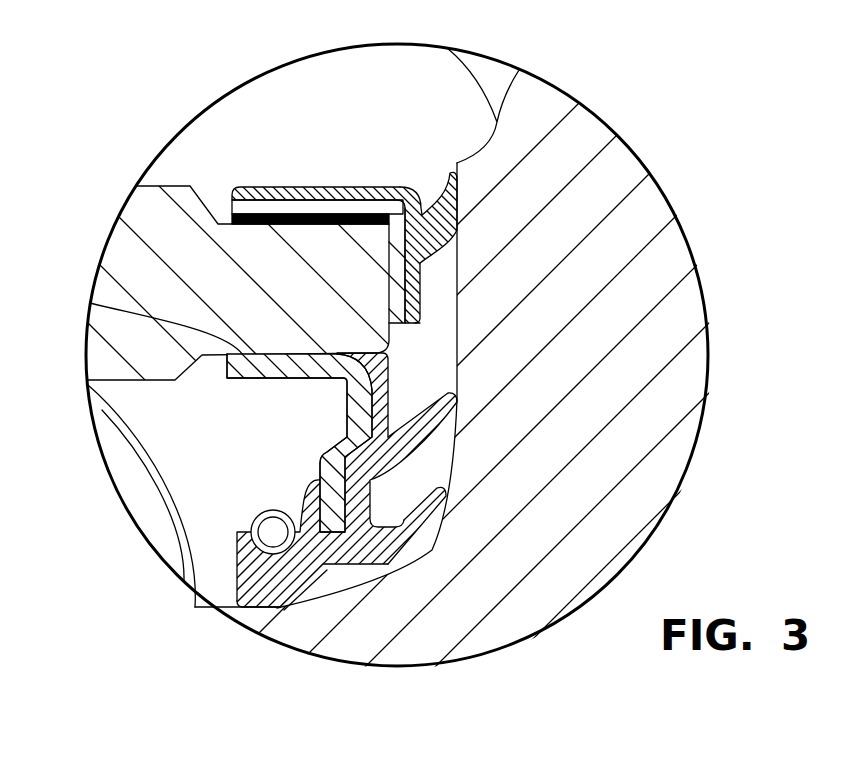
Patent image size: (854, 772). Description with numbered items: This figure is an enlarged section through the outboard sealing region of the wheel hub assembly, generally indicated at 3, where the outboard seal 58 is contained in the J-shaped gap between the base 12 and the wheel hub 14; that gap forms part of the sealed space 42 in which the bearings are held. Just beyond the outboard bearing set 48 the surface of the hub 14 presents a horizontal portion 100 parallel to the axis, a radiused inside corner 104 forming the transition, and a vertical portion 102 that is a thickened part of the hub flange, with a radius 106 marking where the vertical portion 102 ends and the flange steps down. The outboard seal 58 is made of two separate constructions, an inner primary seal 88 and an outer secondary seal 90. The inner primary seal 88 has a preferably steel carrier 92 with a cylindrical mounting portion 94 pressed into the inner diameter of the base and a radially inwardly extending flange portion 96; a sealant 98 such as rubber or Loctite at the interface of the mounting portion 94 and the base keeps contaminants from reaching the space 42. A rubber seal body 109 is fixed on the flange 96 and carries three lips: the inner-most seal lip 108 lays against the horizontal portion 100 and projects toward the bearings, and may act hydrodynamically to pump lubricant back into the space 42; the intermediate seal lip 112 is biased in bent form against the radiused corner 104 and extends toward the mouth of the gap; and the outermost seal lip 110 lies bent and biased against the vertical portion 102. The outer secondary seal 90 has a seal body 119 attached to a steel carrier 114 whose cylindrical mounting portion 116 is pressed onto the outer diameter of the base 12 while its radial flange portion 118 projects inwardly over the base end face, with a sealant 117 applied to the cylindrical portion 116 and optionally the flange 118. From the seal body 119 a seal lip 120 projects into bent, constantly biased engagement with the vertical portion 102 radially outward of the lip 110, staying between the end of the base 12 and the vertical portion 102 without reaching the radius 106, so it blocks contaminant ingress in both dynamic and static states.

The sealing arrangement 3 is at (100, 226).
The base 12 is at (221, 286).
The wheel hub 14 is at (433, 364).
The sealed space 42 is at (281, 436).
The outboard bearing set 48 is at (128, 487).
The outboard seal 58 is at (288, 112).
The inner primary seal 88 is at (233, 535).
The outer secondary seal 90 is at (243, 182).
The carrier 92 is at (130, 315).
The cylindrical mounting portion 94 is at (228, 380).
The flange portion 96 is at (328, 484).
The sealant 98 is at (350, 353).
The horizontal portion 100 is at (238, 606).
The vertical portion 102 is at (458, 332).
The radiused inside corner 104 is at (365, 586).
The radius 106 is at (447, 48).
The inner-most first seal lip 108 is at (257, 608).
The seal body 109 is at (349, 502).
The outermost seal lip 110 is at (458, 397).
The intermediate seal lip 112 is at (443, 508).
The carrier 114 is at (338, 188).
The cylindrical mounting portion 116 is at (281, 208).
The sealant 117 is at (247, 212).
The radial flange portion 118 is at (440, 256).
The seal body 119 is at (415, 198).
The seal lip 120 is at (443, 180).